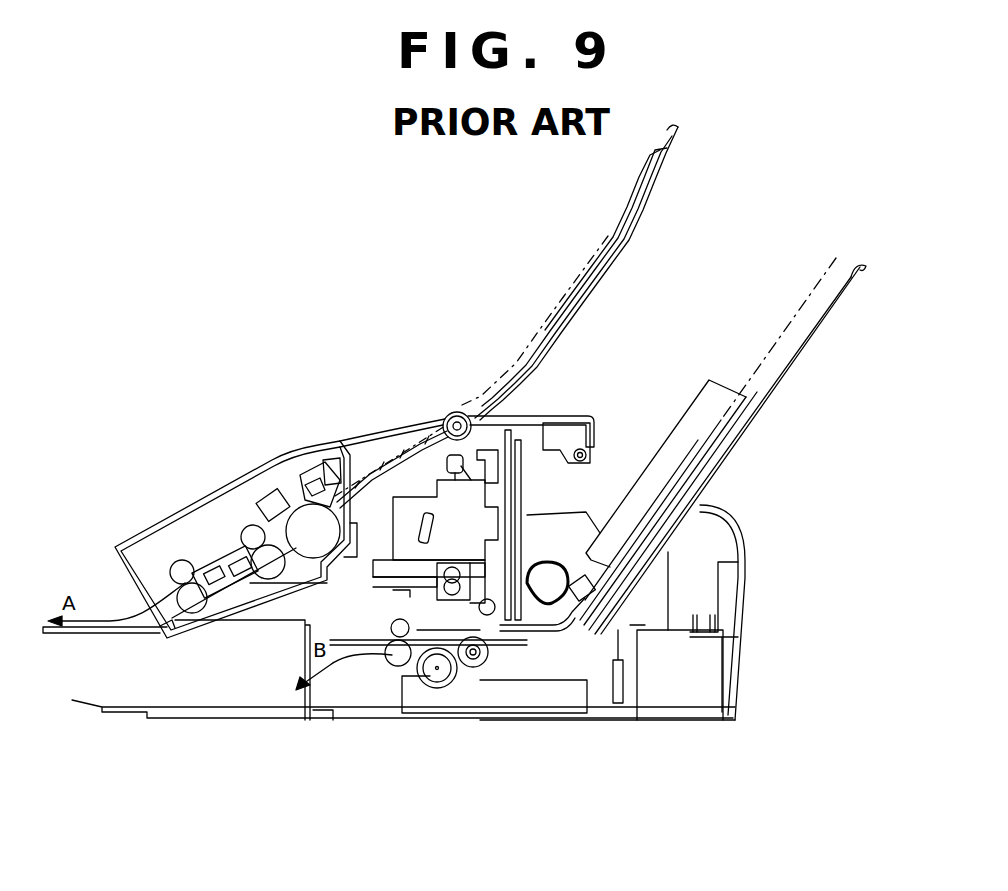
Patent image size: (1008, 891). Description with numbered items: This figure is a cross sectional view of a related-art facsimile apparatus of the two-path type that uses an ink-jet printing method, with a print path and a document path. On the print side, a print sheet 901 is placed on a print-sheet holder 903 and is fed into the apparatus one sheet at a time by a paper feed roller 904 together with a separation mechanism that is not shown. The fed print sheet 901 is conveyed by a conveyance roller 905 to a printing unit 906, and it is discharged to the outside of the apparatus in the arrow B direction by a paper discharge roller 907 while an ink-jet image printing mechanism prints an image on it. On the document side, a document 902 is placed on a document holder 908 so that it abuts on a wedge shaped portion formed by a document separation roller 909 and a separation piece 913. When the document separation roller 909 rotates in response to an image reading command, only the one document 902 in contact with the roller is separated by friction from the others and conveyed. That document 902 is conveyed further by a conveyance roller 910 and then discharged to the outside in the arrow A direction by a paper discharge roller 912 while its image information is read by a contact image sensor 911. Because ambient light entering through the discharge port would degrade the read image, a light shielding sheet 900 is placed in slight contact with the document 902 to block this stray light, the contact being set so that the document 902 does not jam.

The light shielding sheet 900 is at (190, 558).
The print sheet 901 is at (763, 359).
The document 902 is at (490, 385).
The print-sheet holder 903 is at (808, 352).
The paper feed roller 904 is at (552, 577).
The conveyance roller 905 is at (473, 663).
The printing unit 906 is at (427, 604).
The paper discharge roller 907 is at (390, 658).
The document holder 908 is at (643, 212).
The document separation roller 909 is at (307, 545).
The conveyance roller 910 is at (252, 593).
The contact image sensor 911 is at (187, 608).
The paper discharge roller 912 is at (157, 634).
The separation piece 913 is at (301, 483).